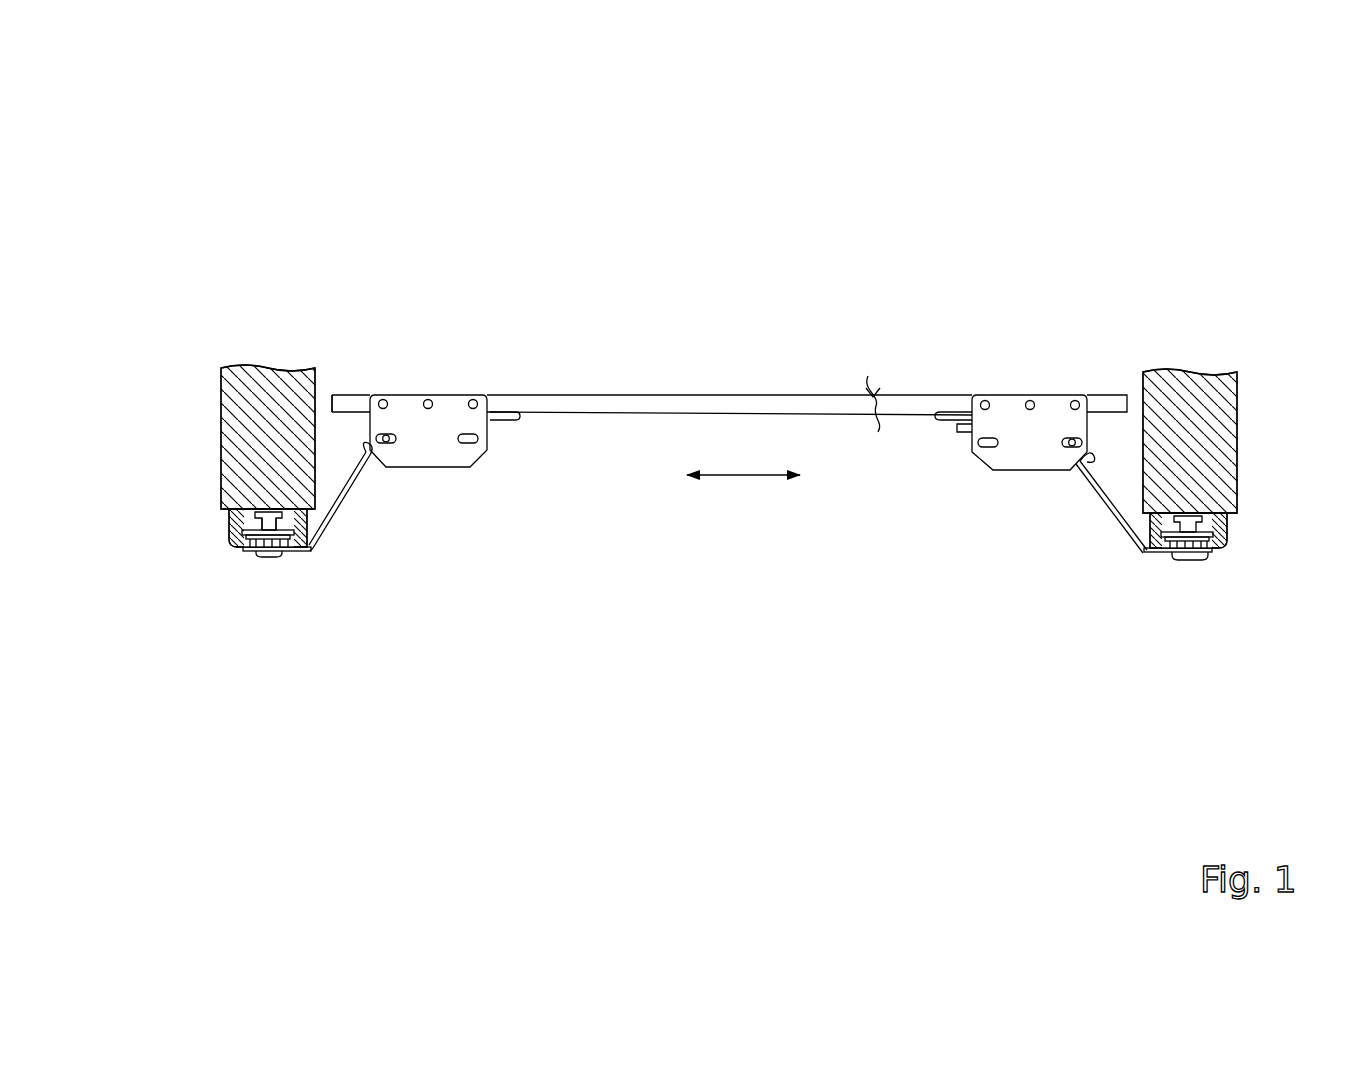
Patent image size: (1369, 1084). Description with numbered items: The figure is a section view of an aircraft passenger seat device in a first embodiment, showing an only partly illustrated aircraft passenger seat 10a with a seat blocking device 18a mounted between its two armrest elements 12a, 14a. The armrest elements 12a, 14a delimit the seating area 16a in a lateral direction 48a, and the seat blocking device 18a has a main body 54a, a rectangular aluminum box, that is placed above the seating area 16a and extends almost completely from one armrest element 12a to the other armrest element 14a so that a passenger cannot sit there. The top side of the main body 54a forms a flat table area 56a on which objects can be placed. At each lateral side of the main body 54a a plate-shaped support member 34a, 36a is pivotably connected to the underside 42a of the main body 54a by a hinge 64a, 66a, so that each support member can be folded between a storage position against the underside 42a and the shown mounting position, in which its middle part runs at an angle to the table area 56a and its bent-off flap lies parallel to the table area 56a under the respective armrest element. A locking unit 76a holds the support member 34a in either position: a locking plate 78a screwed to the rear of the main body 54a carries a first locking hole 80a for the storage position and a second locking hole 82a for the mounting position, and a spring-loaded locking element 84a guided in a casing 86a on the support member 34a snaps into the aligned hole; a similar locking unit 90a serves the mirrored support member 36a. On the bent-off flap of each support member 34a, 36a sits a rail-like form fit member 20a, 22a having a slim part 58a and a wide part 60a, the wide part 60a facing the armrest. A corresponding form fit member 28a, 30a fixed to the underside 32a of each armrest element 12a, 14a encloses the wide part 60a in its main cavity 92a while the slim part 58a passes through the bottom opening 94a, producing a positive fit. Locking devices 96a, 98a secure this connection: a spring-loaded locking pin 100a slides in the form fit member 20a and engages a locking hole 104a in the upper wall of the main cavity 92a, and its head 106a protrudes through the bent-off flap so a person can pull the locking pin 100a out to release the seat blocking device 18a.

The aircraft passenger seat 10a is at (220, 280).
The armrest element 12a is at (235, 368).
The armrest element 14a is at (1222, 405).
The seating area 16a is at (735, 425).
The seat blocking device 18a is at (1100, 341).
The form fit member 20a is at (226, 554).
The form fit member 22a is at (1206, 563).
The form fit member 28a is at (228, 515).
The form fit member 30a is at (1228, 532).
The underside 32a is at (323, 520).
The support member 34a is at (328, 533).
The support member 36a is at (1114, 518).
The underside 42a is at (877, 420).
The lateral direction 48a is at (742, 477).
The main body 54a is at (850, 402).
The table area 56a is at (874, 396).
The slim part 58a is at (247, 537).
The wide part 60a is at (247, 529).
The hinge 64a is at (499, 461).
The hinge 66a is at (977, 495).
The locking unit 76a is at (473, 380).
The locking plate 78a is at (447, 402).
The first locking hole 80a is at (468, 445).
The second locking hole 82a is at (389, 433).
The locking element 84a is at (374, 408).
The casing 86a is at (326, 414).
The locking unit 90a is at (1028, 385).
The main cavity 92a is at (256, 527).
The opening 94a is at (287, 548).
The locking device 96a is at (250, 505).
The locking device 98a is at (1199, 508).
The locking pin 100a is at (270, 531).
The locking hole 104a is at (268, 500).
The head 106a is at (250, 554).